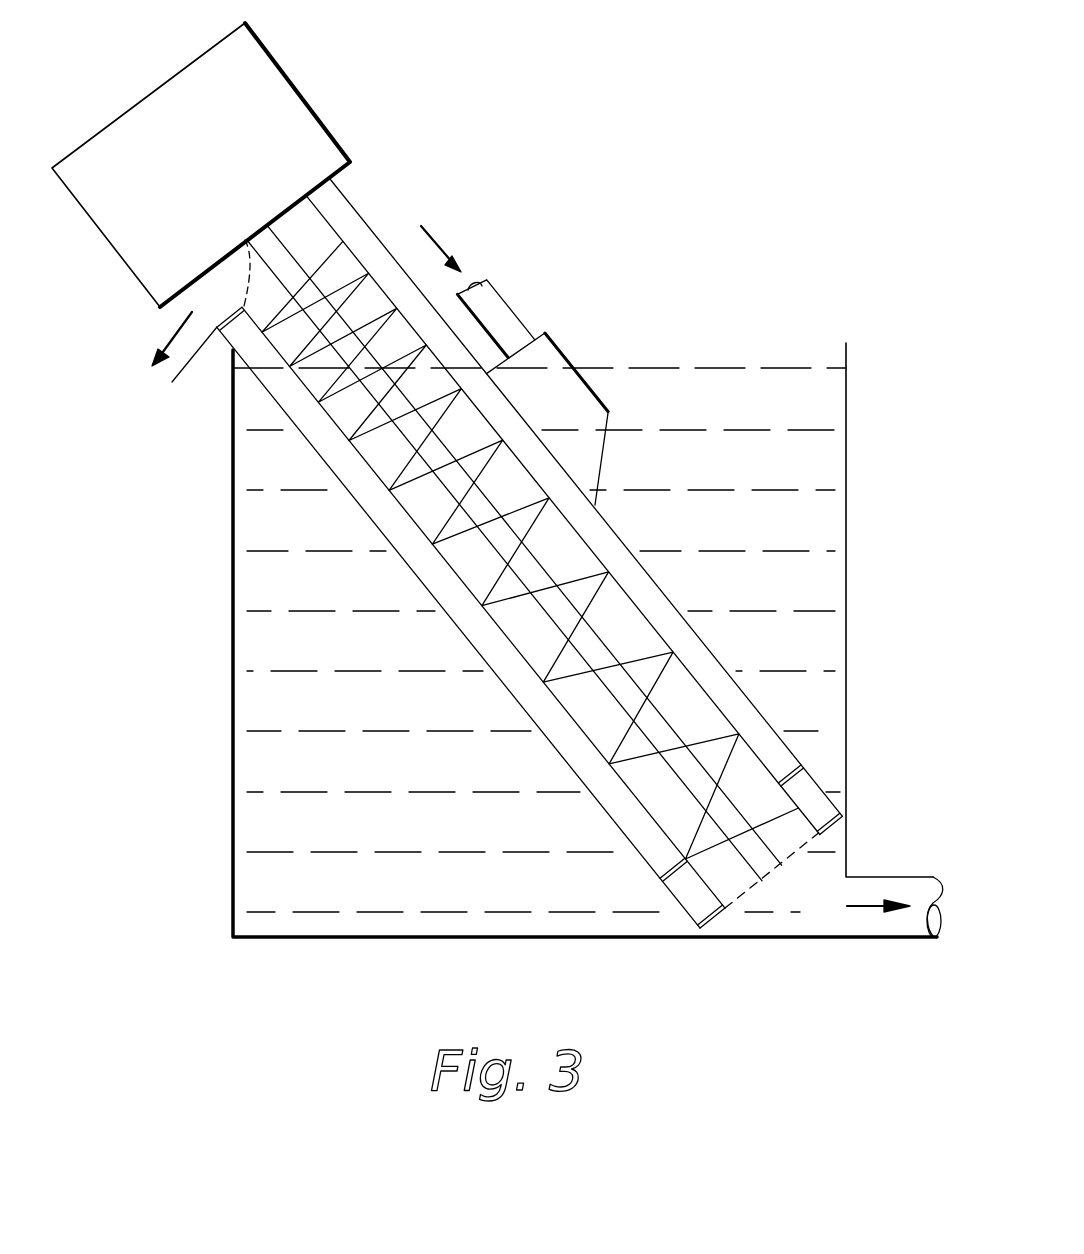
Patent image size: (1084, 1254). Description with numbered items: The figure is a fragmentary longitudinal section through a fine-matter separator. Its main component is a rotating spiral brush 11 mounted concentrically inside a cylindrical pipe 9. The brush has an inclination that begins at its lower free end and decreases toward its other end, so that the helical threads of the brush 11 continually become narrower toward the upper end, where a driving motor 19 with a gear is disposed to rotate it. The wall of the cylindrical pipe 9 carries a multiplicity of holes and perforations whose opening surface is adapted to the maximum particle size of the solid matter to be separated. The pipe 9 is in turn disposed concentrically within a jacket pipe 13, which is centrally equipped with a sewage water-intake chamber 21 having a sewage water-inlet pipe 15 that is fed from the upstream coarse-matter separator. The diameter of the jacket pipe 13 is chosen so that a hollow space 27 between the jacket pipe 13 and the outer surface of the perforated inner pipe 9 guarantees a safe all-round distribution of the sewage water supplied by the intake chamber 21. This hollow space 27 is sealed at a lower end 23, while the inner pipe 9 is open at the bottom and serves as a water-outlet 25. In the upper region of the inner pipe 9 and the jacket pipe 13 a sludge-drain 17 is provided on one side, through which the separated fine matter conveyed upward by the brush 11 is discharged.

The cylindrical pipe 9 is at (713, 700).
The rotating spiral brush 11 is at (592, 602).
The jacket pipe 13 is at (768, 727).
The sewage water-inlet pipe 15 is at (490, 313).
The sludge-drain 17 is at (167, 368).
The driving motor 19 is at (291, 112).
The sewage water-intake chamber 21 is at (562, 351).
The lower end 23 is at (843, 830).
The water-outlet 25 is at (882, 892).
The hollow space 27 is at (605, 543).